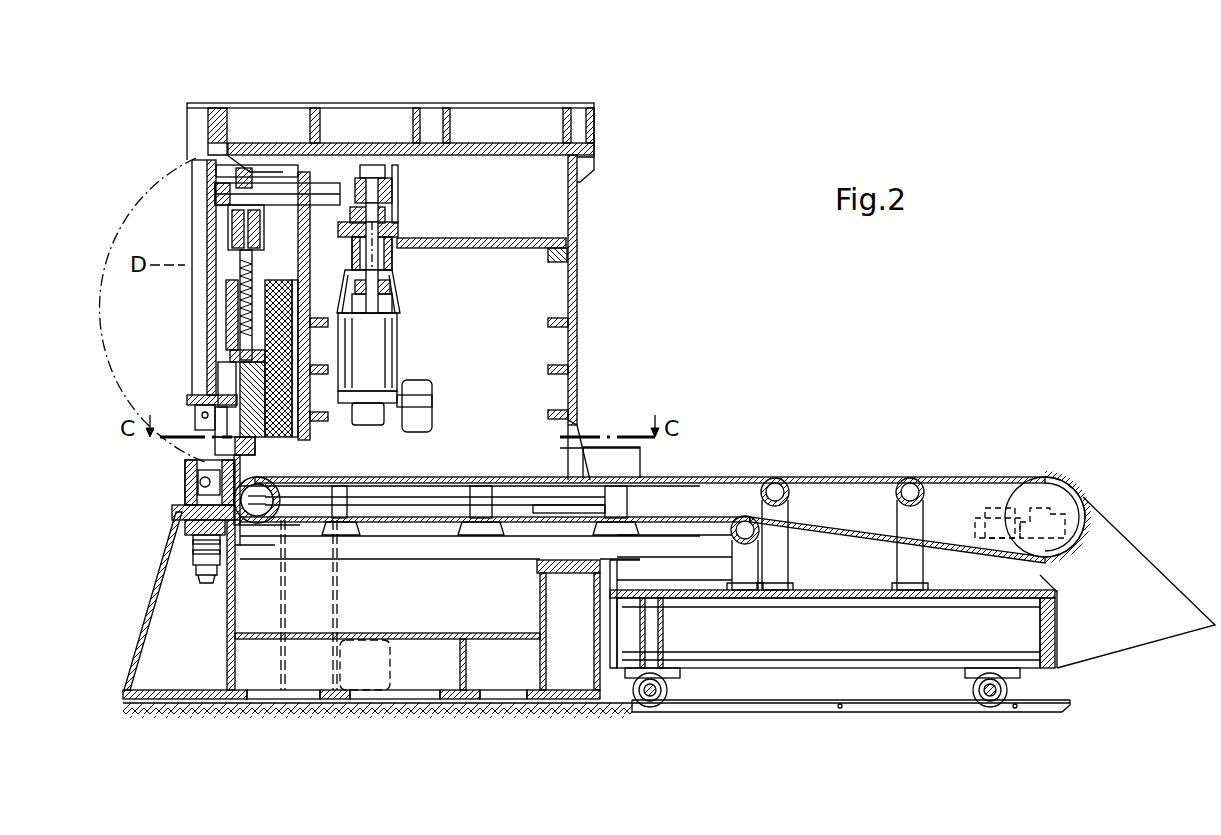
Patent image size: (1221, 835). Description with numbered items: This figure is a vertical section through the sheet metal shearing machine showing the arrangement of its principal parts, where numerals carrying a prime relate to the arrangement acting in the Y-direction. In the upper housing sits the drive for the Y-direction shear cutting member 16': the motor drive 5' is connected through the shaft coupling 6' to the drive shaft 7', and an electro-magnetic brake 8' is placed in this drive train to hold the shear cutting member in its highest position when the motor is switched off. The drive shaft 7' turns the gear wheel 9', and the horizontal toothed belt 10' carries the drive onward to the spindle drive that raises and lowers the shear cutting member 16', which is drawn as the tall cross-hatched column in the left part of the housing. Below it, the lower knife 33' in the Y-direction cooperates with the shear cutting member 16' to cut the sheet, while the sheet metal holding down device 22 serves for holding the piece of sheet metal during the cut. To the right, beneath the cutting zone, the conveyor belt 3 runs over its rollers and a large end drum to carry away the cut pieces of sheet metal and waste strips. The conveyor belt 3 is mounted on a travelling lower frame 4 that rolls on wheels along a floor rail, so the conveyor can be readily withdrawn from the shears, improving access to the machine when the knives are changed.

The toothed belt 10' is at (285, 130).
The gear wheel 9' is at (393, 193).
The electro-magnetic brake 8' is at (391, 210).
The drive shaft 7' is at (389, 249).
The shaft coupling 6' is at (388, 291).
The motor drive 5' is at (389, 372).
The shear cutting member 16' is at (312, 375).
The sheet metal holding down device 22 is at (230, 443).
The lower knife 33' is at (182, 521).
The conveyor belt 3 is at (878, 477).
The travelling lower frame 4 is at (808, 690).